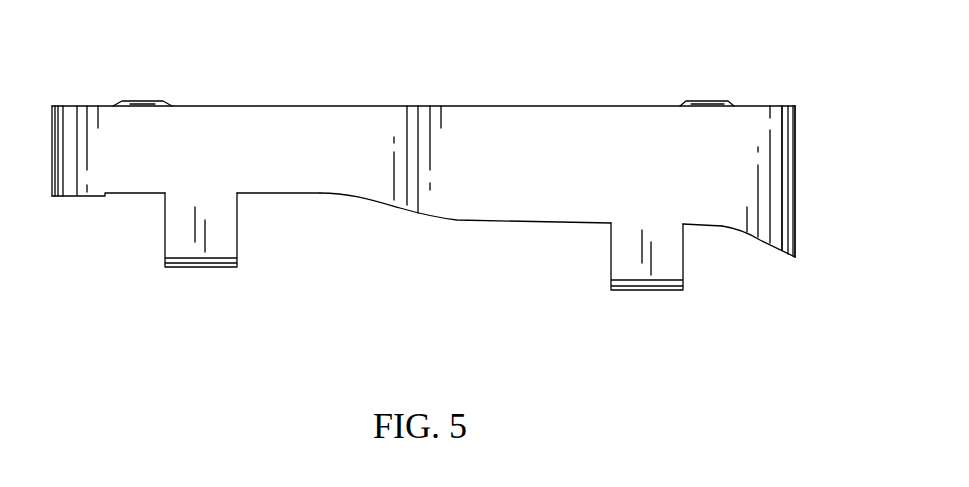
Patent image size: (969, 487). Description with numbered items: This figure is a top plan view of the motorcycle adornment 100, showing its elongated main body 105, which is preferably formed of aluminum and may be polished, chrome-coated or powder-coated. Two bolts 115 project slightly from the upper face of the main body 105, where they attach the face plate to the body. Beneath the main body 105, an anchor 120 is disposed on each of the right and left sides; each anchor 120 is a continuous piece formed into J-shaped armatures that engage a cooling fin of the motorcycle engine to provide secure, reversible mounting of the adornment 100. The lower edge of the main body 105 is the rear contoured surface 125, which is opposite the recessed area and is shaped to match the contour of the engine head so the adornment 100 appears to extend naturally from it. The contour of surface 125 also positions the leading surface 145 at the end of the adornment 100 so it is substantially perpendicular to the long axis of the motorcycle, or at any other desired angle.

The motorcycle adornment 100 is at (264, 58).
The main body 105 is at (553, 130).
The bolts 115 is at (148, 94).
The anchor 120 is at (218, 274).
The rear contoured surface 125 is at (458, 221).
The leading surface 145 is at (794, 147).